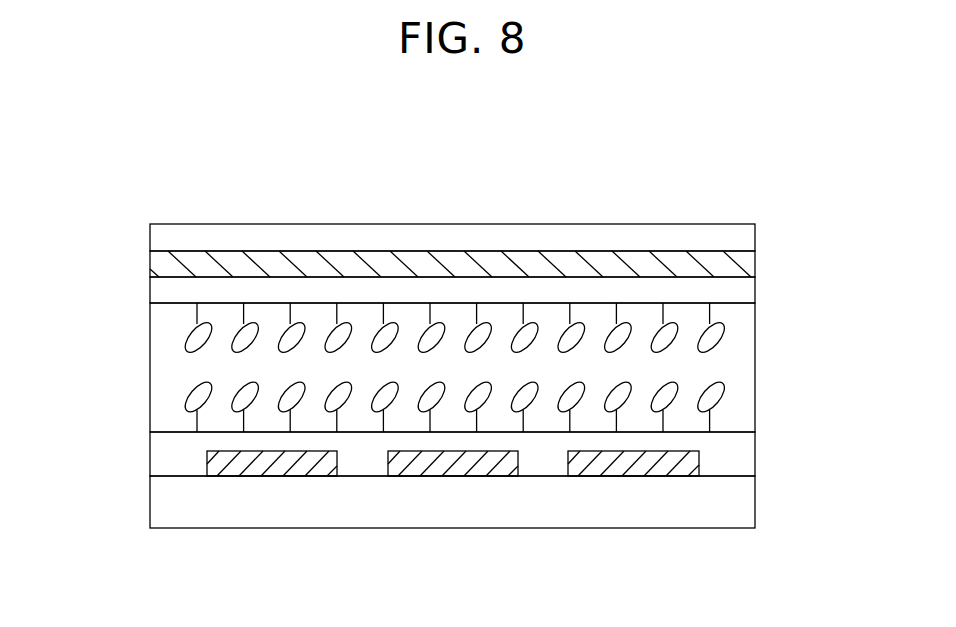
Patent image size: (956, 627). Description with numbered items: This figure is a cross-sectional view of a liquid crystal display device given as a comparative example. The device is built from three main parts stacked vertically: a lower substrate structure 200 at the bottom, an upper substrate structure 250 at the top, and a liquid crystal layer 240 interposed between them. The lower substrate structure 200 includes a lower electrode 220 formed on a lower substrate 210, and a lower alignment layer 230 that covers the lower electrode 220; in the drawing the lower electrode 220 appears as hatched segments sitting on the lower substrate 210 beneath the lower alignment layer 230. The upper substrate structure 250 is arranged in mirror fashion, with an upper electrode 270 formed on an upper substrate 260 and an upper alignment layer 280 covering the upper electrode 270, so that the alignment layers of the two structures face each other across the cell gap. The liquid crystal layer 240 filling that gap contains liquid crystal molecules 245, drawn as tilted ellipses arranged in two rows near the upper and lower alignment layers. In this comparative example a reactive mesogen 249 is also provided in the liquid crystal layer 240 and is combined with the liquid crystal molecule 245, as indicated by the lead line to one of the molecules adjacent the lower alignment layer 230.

The lower substrate structure 200 is at (442, 513).
The lower substrate 210 is at (350, 516).
The lower electrode 220 is at (270, 477).
The lower alignment layer 230 is at (150, 455).
The liquid crystal layer 240 is at (480, 379).
The liquid crystal molecules 245 is at (703, 333).
The reactive mesogen 249 is at (710, 427).
The upper substrate structure 250 is at (442, 263).
The upper substrate 260 is at (150, 237).
The upper electrode 270 is at (150, 264).
The upper alignment layer 280 is at (150, 291).